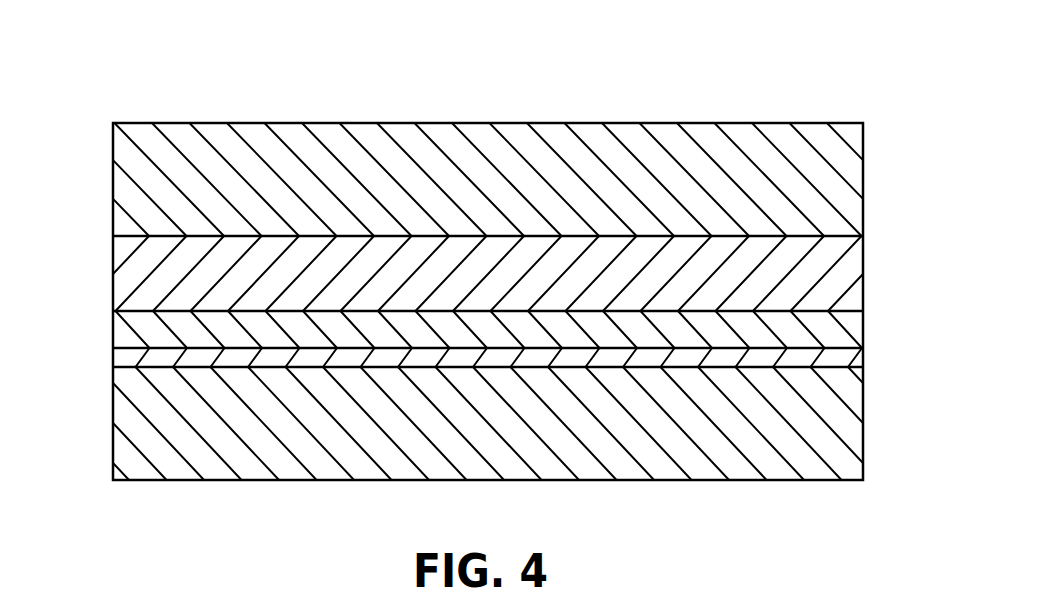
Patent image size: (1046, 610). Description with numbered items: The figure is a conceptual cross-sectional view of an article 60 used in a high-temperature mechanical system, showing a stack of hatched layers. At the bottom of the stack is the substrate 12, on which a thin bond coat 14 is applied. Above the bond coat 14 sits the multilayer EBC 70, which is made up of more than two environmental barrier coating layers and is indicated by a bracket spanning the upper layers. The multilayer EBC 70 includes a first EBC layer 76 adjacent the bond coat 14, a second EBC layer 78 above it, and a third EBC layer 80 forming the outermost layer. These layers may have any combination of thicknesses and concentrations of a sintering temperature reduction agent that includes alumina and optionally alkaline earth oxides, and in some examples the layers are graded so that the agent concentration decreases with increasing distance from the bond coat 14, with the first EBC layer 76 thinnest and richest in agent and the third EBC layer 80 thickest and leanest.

The article 60 is at (84, 69).
The multilayer EBC 70 is at (908, 125).
The third EBC layer 80 is at (132, 189).
The second EBC layer 78 is at (132, 245).
The first EBC layer 76 is at (132, 324).
The bond coat 14 is at (132, 358).
The substrate 12 is at (132, 403).